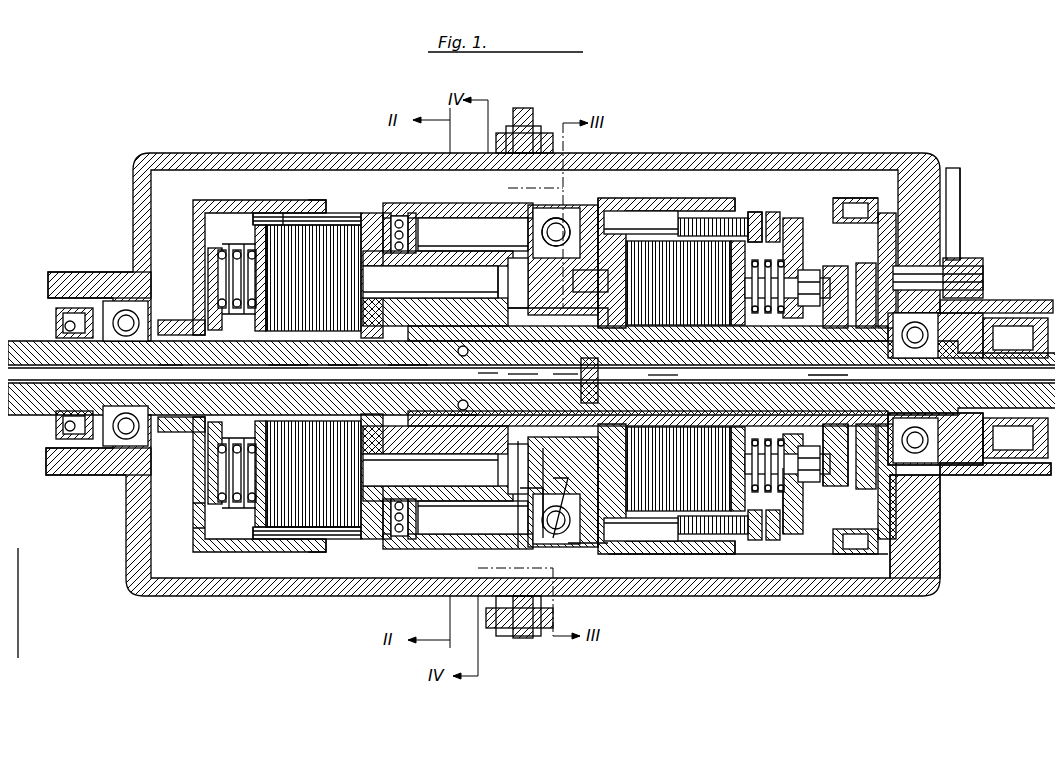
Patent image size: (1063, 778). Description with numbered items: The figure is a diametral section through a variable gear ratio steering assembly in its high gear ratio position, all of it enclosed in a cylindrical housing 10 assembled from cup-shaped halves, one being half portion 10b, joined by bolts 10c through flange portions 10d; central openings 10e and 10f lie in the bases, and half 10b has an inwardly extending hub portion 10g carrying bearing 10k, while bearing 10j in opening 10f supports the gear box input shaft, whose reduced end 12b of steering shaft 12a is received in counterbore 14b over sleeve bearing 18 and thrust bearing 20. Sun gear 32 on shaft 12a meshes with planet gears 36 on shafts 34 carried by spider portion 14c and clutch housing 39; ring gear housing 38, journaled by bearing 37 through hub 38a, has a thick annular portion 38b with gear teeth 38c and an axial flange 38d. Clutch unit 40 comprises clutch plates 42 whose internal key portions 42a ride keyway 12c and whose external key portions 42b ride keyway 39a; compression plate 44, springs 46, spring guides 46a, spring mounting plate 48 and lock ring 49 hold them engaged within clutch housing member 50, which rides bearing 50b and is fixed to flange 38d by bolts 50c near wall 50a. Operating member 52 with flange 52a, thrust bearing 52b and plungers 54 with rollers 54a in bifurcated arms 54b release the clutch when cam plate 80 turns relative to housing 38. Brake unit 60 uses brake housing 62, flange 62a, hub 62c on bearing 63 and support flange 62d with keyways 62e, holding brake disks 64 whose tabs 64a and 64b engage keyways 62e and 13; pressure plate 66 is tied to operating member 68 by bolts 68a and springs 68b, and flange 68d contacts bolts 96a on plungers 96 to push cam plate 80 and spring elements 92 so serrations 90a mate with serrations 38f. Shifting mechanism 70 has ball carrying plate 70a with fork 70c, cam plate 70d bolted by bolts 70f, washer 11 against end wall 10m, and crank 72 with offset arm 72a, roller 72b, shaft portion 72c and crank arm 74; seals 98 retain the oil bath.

The housing 10 is at (170, 588).
The housing half portion 10b is at (85, 455).
The bolts 10c is at (525, 620).
The flange portions 10d is at (505, 628).
The central opening 10e is at (100, 290).
The central opening 10f is at (915, 470).
The annular hub portion 10g is at (826, 364).
The bearing 10j is at (932, 462).
The bearing 10k is at (660, 365).
The radial end wall 10m is at (925, 530).
The washer 11 is at (944, 160).
The steering shaft 12a is at (22, 333).
The reduced diameter end portion 12b is at (512, 364).
The keyway 12c is at (175, 420).
The keyways 13 is at (692, 333).
The counterbore 14b is at (562, 364).
The spider portion 14c is at (492, 270).
The sleeve bearing 18 is at (590, 378).
The ball type thrust bearing 20 is at (480, 364).
The sun gear 32 is at (400, 358).
The planet gear shafts 34 is at (340, 358).
The planet gear 36 is at (470, 243).
The bearing 37 is at (490, 280).
The ring gear housing 38 is at (368, 205).
The hub portion 38a is at (589, 281).
The annular portion 38b is at (402, 197).
The gear teeth 38c is at (442, 240).
The flange portion 38d is at (356, 290).
The serrations 38f is at (536, 470).
The clutch housing 39 is at (307, 209).
The keyway 39a is at (262, 207).
The clutch unit 40 is at (285, 208).
The clutch plates 42 is at (300, 522).
The internal key portions 42a is at (282, 358).
The external key portions 42b is at (275, 522).
The compression plate 44 is at (250, 212).
The springs 46 is at (212, 245).
The spring guides 46a is at (222, 272).
The spring mounting plate 48 is at (203, 480).
The lock ring 49 is at (175, 358).
The clutch housing member 50 is at (300, 192).
The cup wall 50a is at (190, 508).
The bearing 50b is at (172, 312).
The bolts 50c is at (318, 198).
The operating member 52 is at (266, 215).
The radial flange portion 52a is at (386, 206).
The thrust bearing 52b is at (400, 218).
The plungers 54 is at (473, 374).
The cam follower rollers 54a is at (585, 205).
The bifurcated arms 54b is at (560, 214).
The brake unit 60 is at (620, 590).
The brake housing 62 is at (615, 205).
The flange portion 62a is at (592, 190).
The bearing hub portion 62c is at (565, 500).
The brake support flange 62d is at (705, 215).
The keyways 62e is at (735, 203).
The bearing 63 is at (592, 316).
The brake disks 64 is at (688, 503).
The key tabs 64a is at (728, 233).
The key tabs 64b is at (730, 407).
The pressure plate 66 is at (748, 204).
The operating member 68 is at (782, 528).
The bolts 68a is at (785, 215).
The springs 68b is at (765, 255).
The flange 68d is at (781, 530).
The shifting mechanism 70 is at (826, 256).
The ball carrying plate 70a is at (858, 482).
The fork portion 70c is at (880, 205).
The cam plate 70d is at (792, 492).
The bolts 70f is at (845, 488).
The crank 72 is at (930, 262).
The offset arm 72a is at (835, 188).
The roller 72b is at (850, 190).
The shaft portion 72c is at (953, 200).
The crank arm 74 is at (975, 256).
The cam plate 80 is at (585, 540).
The serrations 90a is at (535, 492).
The spring elements 92 is at (556, 478).
The plungers 96 is at (640, 210).
The contact bolts 96a is at (765, 204).
The seals 98 is at (48, 412).